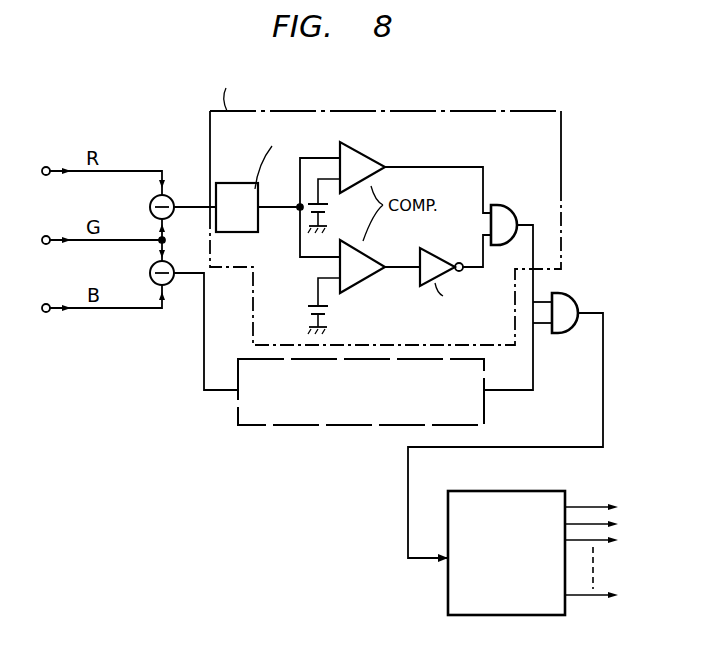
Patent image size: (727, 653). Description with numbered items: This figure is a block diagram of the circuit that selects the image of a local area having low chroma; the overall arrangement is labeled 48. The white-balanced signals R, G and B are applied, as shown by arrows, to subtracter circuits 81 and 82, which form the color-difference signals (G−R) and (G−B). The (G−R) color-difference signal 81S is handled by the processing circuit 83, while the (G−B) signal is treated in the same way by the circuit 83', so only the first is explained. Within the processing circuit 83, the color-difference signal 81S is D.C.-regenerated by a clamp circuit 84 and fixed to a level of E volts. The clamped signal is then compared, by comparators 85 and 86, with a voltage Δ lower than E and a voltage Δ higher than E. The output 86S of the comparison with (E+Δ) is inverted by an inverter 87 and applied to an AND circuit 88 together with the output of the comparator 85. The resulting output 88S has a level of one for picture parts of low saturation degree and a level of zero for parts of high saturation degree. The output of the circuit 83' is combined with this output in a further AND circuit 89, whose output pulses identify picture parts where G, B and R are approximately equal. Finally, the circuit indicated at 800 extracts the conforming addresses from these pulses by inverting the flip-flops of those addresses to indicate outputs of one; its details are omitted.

The processing circuit 48 is at (418, 79).
The processing circuit 83 is at (385, 209).
The subtracter circuit 81 is at (170, 197).
The color-difference signal 81S is at (192, 208).
The subtracter circuit 82 is at (172, 282).
The clamp circuit 84 is at (240, 191).
The comparator 85 is at (377, 161).
The comparator 86 is at (369, 255).
The comparator output 86S is at (403, 270).
The inverter 87 is at (444, 258).
The AND circuit 88 is at (509, 206).
The AND circuit output 88S is at (533, 244).
The AND circuit 89 is at (570, 296).
The processing circuit 83' is at (390, 392).
The address extracting circuit 800 is at (528, 503).